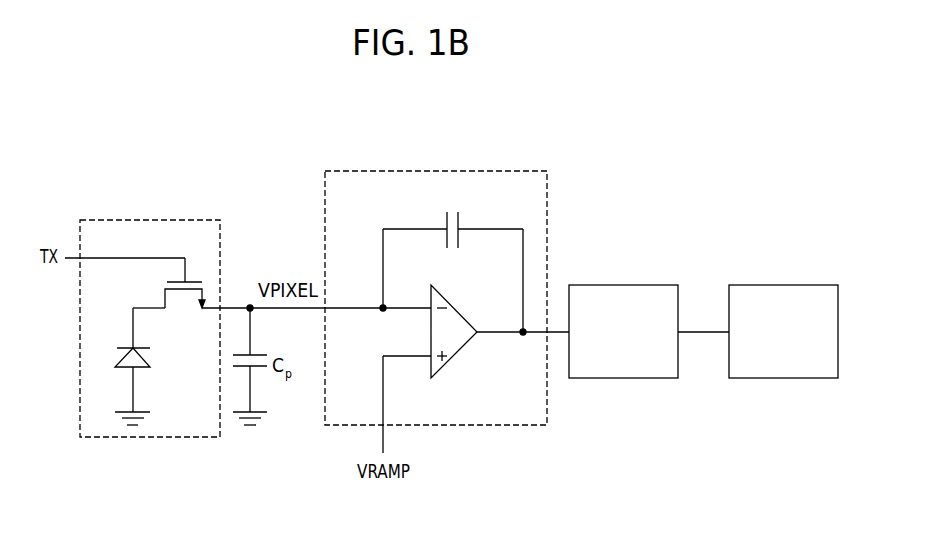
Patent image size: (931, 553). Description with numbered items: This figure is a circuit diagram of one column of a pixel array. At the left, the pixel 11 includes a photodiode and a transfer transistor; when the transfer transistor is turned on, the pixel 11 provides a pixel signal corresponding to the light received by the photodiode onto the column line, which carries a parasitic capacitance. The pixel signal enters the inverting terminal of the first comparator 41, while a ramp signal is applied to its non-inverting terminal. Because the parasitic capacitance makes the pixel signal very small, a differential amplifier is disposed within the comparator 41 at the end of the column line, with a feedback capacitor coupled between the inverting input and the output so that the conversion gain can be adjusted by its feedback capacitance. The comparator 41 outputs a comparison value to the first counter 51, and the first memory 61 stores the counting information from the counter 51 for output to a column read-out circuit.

The pixel 11 is at (183, 219).
The first comparator 41 is at (508, 171).
The first counter 51 is at (648, 285).
The first memory 61 is at (807, 285).